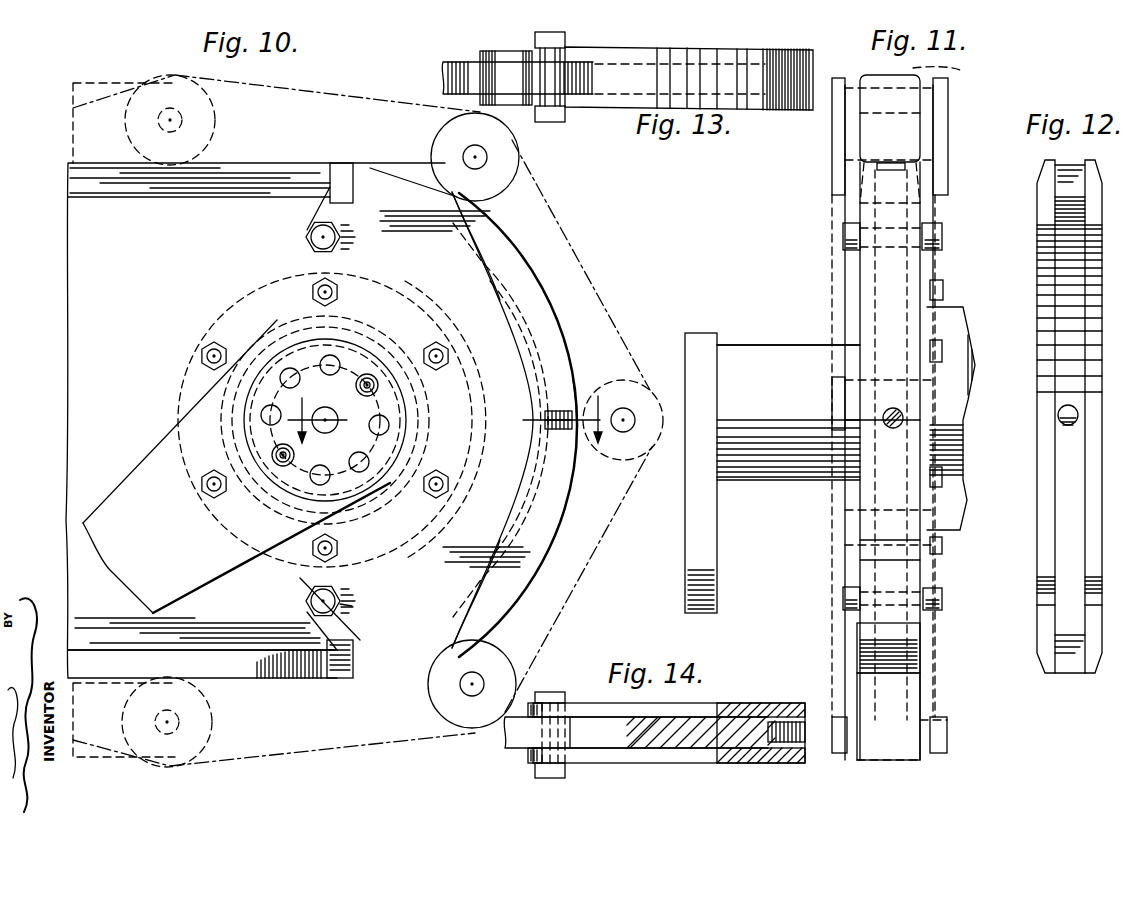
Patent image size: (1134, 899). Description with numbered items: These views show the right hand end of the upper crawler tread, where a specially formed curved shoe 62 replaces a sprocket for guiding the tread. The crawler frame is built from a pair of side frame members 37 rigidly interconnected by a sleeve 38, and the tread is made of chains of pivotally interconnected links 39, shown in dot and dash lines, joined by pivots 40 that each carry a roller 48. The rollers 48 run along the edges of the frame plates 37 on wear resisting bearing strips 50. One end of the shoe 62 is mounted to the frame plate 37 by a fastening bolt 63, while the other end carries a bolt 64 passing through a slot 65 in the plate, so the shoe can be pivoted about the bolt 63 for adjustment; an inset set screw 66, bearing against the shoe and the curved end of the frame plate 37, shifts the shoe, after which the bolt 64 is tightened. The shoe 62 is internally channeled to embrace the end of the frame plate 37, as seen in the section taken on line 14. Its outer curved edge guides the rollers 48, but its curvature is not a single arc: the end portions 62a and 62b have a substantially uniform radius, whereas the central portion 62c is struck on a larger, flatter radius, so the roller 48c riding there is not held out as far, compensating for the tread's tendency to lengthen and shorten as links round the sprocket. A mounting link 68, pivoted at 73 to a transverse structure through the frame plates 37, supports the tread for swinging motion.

In FIG. 10, the section line 14 is at (456, 410).
In FIG. 10, the side plate or frame member 37 is at (66, 355).
In FIG. 13, the side plate or frame member 37 is at (463, 62).
In FIG. 14, the side plate or frame member 37 is at (667, 740).
In FIG. 11, the side plate or frame member 37 is at (870, 490).
In FIG. 10, the sleeve 38 is at (277, 320).
In FIG. 11, the sleeve 38 is at (950, 310).
In FIG. 10, the link 39 is at (327, 100).
In FIG. 11, the link 39 is at (832, 148).
In FIG. 10, the pivot 40 is at (488, 157).
In FIG. 10, the roller 48 is at (173, 75).
In FIG. 11, the roller 48 is at (935, 70).
In FIG. 10, the roller 48c is at (640, 460).
In FIG. 10, the bearing strip 50 is at (125, 657).
In FIG. 13, the bearing strip 50 is at (512, 43).
In FIG. 11, the bearing strip 50 is at (852, 630).
In FIG. 10, the curved shoe 62 is at (372, 256).
In FIG. 13, the curved shoe 62 is at (716, 49).
In FIG. 14, the curved shoe 62 is at (731, 700).
In FIG. 11, the curved shoe 62 is at (864, 283).
In FIG. 12, the curved shoe 62 is at (1032, 312).
In FIG. 10, the bearing surface portion 62a is at (503, 230).
In FIG. 10, the bearing surface portion 62b is at (500, 607).
In FIG. 10, the central bearing surface portion 62c is at (573, 378).
In FIG. 10, the fastening bolt 63 is at (310, 230).
In FIG. 13, the fastening bolt 63 is at (565, 40).
In FIG. 11, the fastening bolt 63 is at (843, 234).
In FIG. 10, the bolt 64 is at (306, 597).
In FIG. 14, the bolt 64 is at (552, 692).
In FIG. 11, the bolt 64 is at (843, 596).
In FIG. 10, the slot 65 is at (352, 604).
In FIG. 14, the slot 65 is at (532, 720).
In FIG. 10, the inset set screw 66 is at (548, 433).
In FIG. 14, the inset set screw 66 is at (788, 727).
In FIG. 11, the inset set screw 66 is at (893, 408).
In FIG. 12, the inset set screw 66 is at (1058, 421).
In FIG. 10, the mounting arm or link 68 is at (147, 465).
In FIG. 11, the mounting arm or link 68 is at (703, 523).
In FIG. 10, the pivot 73 is at (397, 398).
In FIG. 11, the pivot 73 is at (796, 345).